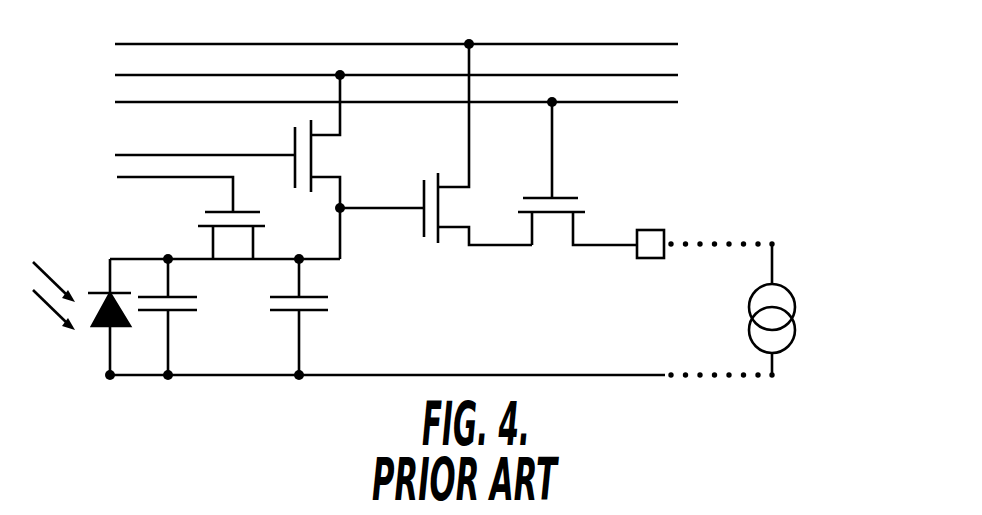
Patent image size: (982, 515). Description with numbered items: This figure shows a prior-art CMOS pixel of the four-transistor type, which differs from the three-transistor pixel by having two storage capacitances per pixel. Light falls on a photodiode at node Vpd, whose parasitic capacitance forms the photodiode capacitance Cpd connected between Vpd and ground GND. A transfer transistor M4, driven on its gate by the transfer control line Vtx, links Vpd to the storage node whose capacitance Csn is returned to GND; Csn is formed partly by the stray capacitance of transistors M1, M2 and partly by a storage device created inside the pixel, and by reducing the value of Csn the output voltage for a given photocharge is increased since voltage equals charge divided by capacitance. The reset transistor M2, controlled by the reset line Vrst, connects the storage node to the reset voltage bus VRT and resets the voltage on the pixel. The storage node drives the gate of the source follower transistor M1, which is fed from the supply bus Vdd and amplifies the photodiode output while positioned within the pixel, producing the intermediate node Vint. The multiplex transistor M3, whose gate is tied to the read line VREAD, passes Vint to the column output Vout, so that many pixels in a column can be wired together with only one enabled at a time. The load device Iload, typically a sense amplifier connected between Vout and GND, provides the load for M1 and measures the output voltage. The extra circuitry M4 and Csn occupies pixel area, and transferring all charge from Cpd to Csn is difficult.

The supply voltage line Vdd is at (372, 30).
The reset voltage line VRT is at (372, 68).
The read select line VREAD is at (357, 103).
The reset control line Vrst is at (182, 151).
The transfer control line Vtx is at (153, 186).
The photodiode node Vpd is at (82, 294).
The source follower transistor M1 is at (436, 142).
The reset transistor M2 is at (338, 164).
The multiplex transistor M3 is at (577, 171).
The transfer transistor M4 is at (211, 227).
The photodiode capacitance Cpd is at (176, 317).
The storage node capacitance Csn is at (314, 317).
The intermediate node Vint is at (500, 268).
The output voltage Vout is at (706, 228).
The load device Iload is at (807, 310).
The ground GND is at (442, 354).